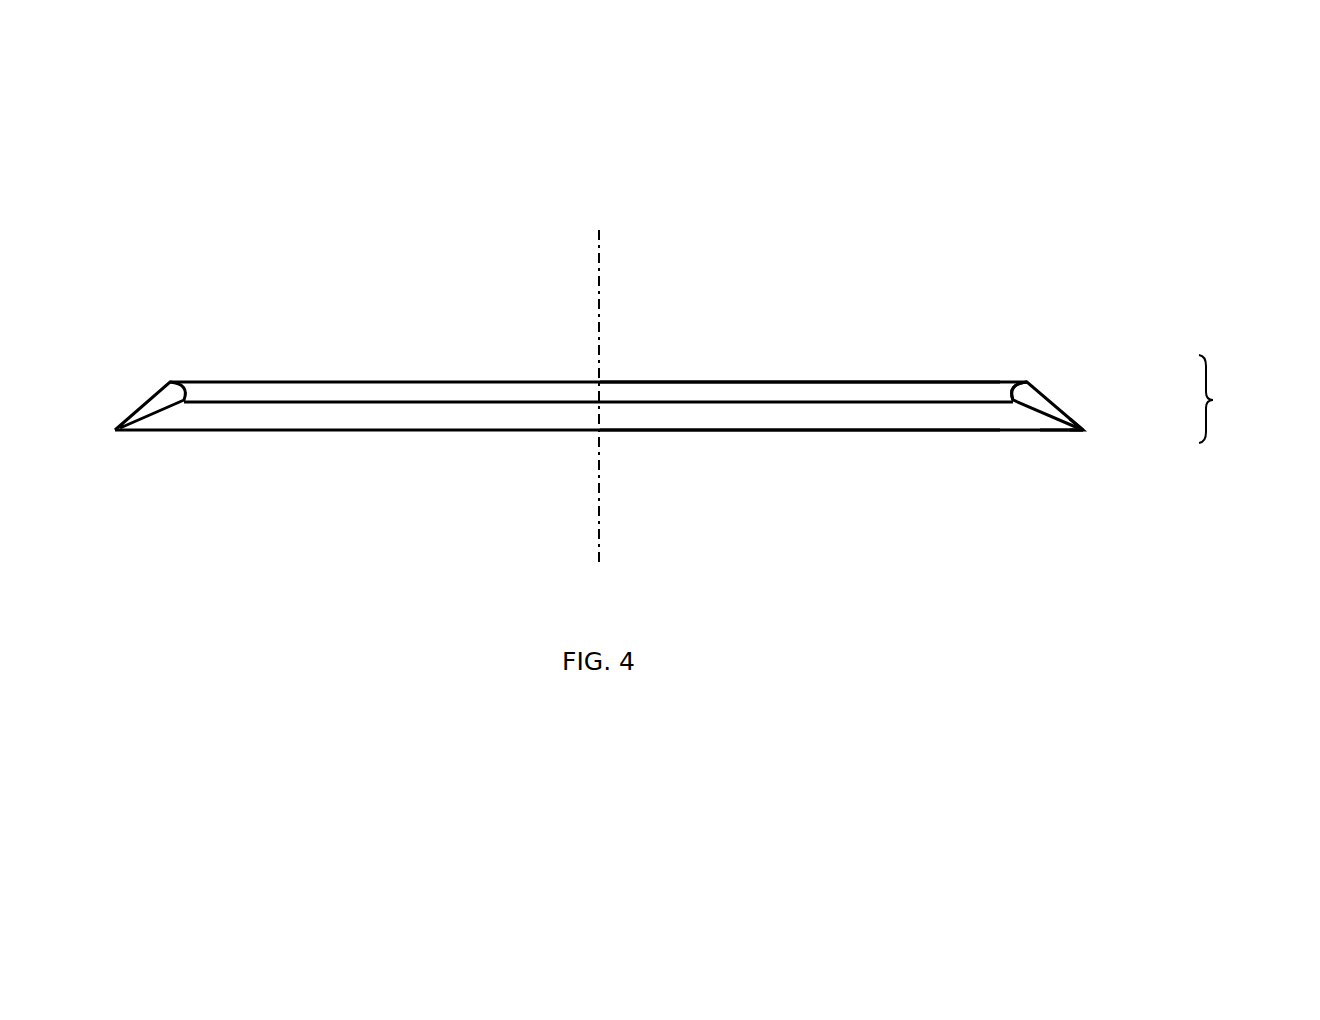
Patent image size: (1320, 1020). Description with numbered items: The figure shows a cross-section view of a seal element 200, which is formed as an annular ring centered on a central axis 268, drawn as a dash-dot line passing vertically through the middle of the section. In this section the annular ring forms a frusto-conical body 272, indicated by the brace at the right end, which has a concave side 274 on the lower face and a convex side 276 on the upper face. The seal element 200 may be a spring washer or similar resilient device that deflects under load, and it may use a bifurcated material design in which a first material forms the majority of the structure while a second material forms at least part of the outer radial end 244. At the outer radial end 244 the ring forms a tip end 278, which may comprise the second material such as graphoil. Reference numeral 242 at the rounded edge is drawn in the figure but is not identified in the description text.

The seal element 200 is at (931, 124).
The central axis 268 is at (600, 276).
The convex side 276 is at (831, 321).
The rounded edge 242 is at (1001, 384).
The tip end 278 is at (1092, 427).
The frusto-conical body 272 is at (1213, 400).
The outer radial end 244 is at (1101, 442).
The concave side 274 is at (899, 479).